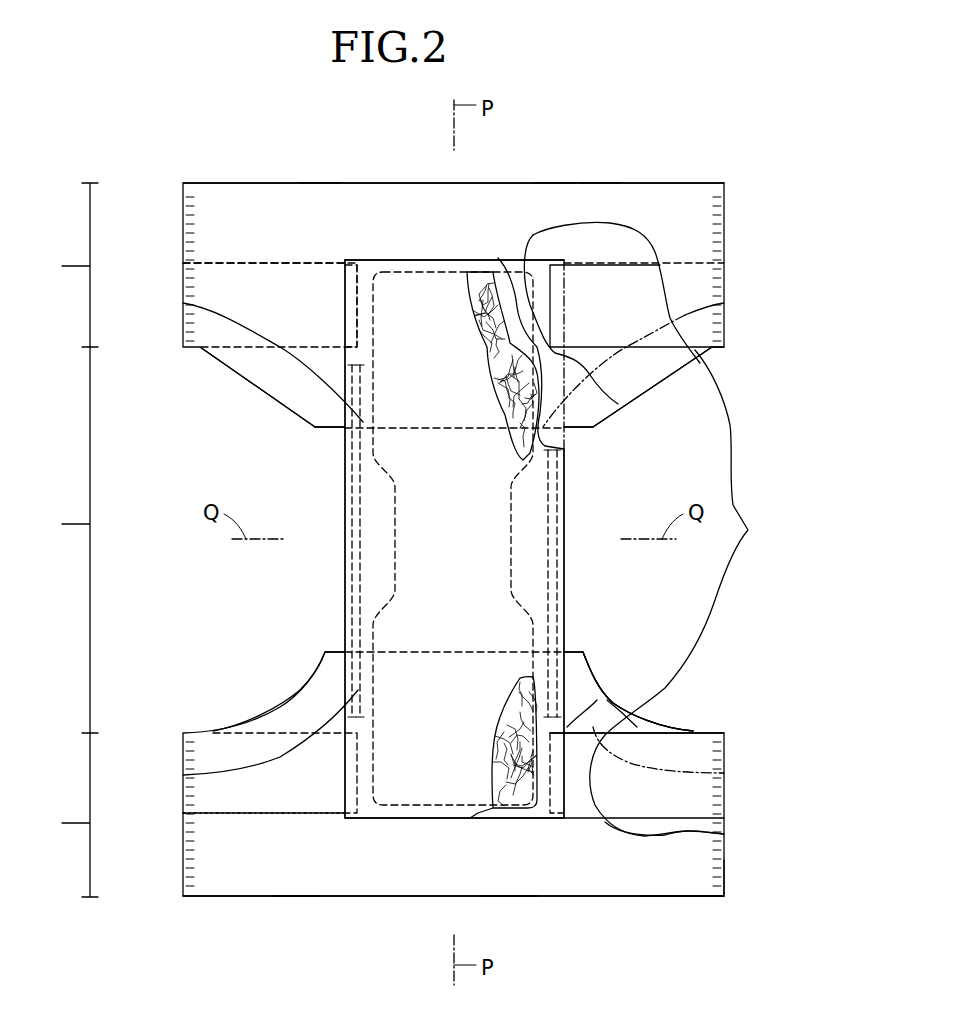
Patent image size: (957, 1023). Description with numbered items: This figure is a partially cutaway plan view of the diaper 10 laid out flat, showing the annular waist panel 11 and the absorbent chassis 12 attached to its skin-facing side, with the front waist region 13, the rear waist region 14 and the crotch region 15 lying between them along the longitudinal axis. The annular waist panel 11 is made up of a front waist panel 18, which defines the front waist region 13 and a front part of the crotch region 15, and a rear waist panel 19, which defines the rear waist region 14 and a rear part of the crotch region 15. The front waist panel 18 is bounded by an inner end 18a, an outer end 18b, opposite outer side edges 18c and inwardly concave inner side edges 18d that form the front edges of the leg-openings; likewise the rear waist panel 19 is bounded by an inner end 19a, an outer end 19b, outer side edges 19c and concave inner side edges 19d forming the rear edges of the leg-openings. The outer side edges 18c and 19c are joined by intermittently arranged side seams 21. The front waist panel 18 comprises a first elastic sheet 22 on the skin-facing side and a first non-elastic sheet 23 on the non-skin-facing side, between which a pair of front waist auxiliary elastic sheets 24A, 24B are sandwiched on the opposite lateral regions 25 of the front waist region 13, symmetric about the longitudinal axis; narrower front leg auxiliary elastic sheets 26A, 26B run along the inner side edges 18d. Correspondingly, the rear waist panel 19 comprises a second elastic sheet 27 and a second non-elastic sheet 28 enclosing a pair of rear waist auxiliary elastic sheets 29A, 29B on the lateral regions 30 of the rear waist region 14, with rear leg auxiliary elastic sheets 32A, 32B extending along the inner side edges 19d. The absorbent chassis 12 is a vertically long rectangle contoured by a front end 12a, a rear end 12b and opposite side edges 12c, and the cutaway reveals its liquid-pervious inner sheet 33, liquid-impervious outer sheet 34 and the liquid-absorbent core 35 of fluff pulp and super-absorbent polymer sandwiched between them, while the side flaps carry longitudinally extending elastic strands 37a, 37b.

The diaper 10 is at (707, 135).
The annular waist panel 11 is at (673, 593).
The absorbent chassis 12 is at (367, 250).
The front end 12a is at (420, 819).
The rear end 12b is at (435, 259).
The side edges 12c is at (564, 505).
The front waist region 13 is at (64, 815).
The rear waist region 14 is at (64, 265).
The crotch region 15 is at (64, 540).
The front waist panel 18 is at (573, 897).
The inner end 18a is at (583, 651).
The outer end 18b is at (340, 897).
The outer side edges 18c is at (725, 752).
The inner side edges 18d is at (588, 667).
The rear waist panel 19 is at (262, 196).
The inner end 19a is at (329, 436).
The outer end 19b is at (364, 184).
The outer side edges 19c is at (723, 238).
The inner side edges 19d is at (660, 378).
The side seams 21 is at (192, 873).
The first elastic sheet 22 is at (712, 858).
The first non-elastic sheet 23 is at (712, 822).
The front waist auxiliary elastic sheet 24A is at (245, 815).
The front waist auxiliary elastic sheet 24B is at (637, 730).
The lateral regions 25 is at (665, 897).
The front leg auxiliary elastic sheet 26A is at (312, 710).
The front leg auxiliary elastic sheet 26B is at (600, 681).
The second elastic sheet 27 is at (555, 196).
The second non-elastic sheet 28 is at (596, 234).
The rear waist auxiliary elastic sheet 29A is at (247, 262).
The rear waist auxiliary elastic sheet 29B is at (645, 262).
The lateral regions 30 is at (597, 196).
The rear leg auxiliary elastic sheet 32A is at (200, 323).
The rear leg auxiliary elastic sheet 32B is at (713, 325).
The inner sheet 33 is at (401, 280).
The outer sheet 34 is at (505, 260).
The liquid-absorbent core 35 is at (482, 272).
The elastic strand 37a is at (547, 695).
The elastic strand 37b is at (548, 710).